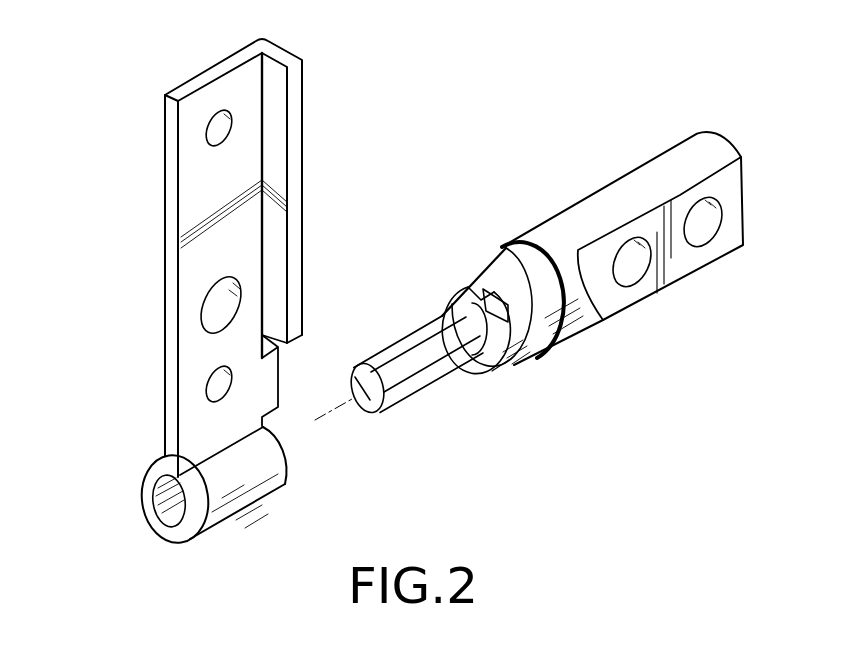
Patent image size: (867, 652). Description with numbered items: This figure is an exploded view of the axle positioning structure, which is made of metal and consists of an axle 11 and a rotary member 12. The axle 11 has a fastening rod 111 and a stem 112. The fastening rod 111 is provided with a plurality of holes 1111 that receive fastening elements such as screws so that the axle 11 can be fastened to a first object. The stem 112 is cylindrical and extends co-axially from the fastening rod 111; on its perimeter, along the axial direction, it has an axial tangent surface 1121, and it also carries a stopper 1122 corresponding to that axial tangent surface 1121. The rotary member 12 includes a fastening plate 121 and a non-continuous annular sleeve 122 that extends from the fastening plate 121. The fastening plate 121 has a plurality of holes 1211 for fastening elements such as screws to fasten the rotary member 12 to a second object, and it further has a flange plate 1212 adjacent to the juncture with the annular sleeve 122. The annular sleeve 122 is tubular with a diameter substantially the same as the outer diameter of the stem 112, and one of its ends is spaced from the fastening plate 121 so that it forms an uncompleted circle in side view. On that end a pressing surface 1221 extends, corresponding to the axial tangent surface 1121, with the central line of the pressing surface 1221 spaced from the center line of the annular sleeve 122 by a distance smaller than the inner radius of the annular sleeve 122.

The axle 11 is at (534, 186).
The fastening rod 111 is at (658, 283).
The holes 1111 is at (706, 226).
The stem 112 is at (457, 377).
The axial tangent surface 1121 is at (400, 367).
The stopper 1122 is at (487, 296).
The rotary member 12 is at (150, 302).
The fastening plate 121 is at (197, 214).
The holes 1211 is at (227, 110).
The flange plate 1212 is at (275, 384).
The annular sleeve 122 is at (176, 528).
The pressing surface 1221 is at (160, 503).